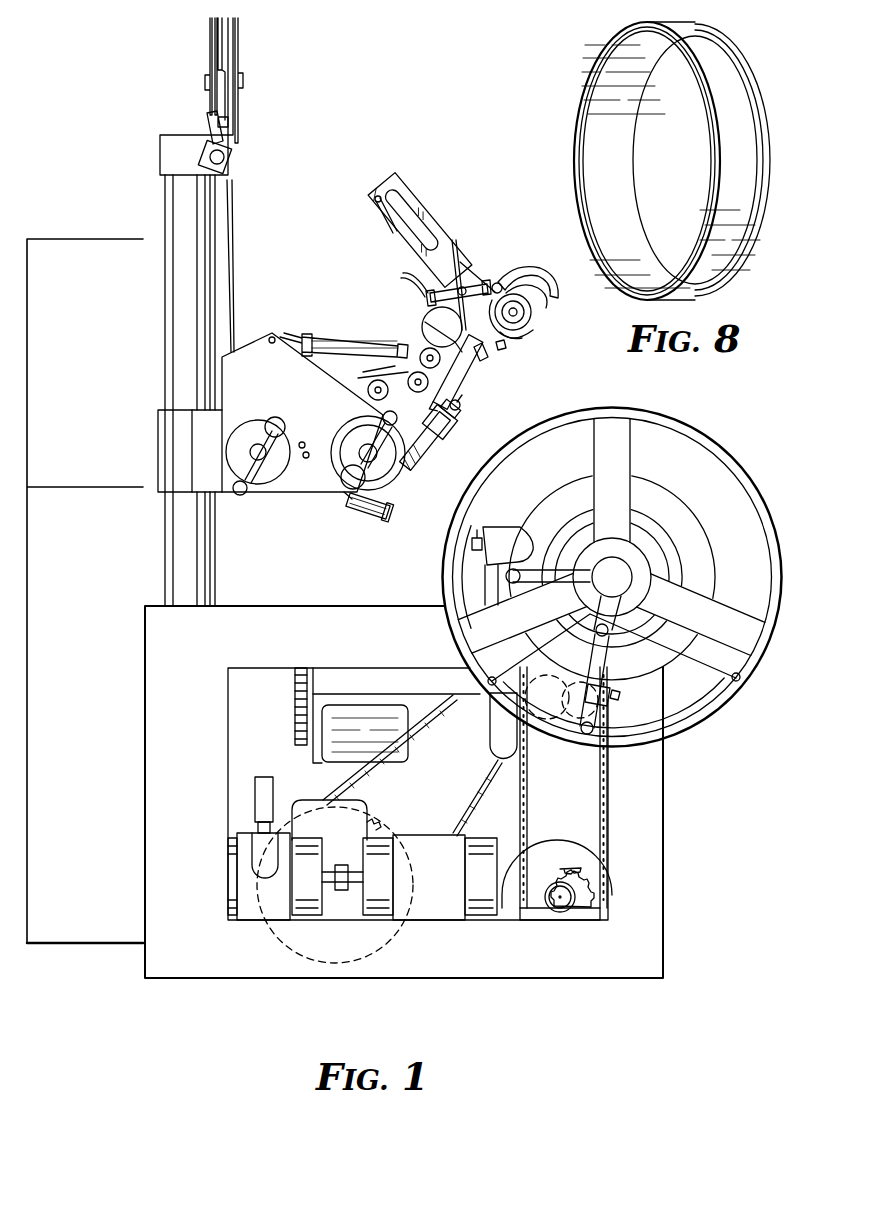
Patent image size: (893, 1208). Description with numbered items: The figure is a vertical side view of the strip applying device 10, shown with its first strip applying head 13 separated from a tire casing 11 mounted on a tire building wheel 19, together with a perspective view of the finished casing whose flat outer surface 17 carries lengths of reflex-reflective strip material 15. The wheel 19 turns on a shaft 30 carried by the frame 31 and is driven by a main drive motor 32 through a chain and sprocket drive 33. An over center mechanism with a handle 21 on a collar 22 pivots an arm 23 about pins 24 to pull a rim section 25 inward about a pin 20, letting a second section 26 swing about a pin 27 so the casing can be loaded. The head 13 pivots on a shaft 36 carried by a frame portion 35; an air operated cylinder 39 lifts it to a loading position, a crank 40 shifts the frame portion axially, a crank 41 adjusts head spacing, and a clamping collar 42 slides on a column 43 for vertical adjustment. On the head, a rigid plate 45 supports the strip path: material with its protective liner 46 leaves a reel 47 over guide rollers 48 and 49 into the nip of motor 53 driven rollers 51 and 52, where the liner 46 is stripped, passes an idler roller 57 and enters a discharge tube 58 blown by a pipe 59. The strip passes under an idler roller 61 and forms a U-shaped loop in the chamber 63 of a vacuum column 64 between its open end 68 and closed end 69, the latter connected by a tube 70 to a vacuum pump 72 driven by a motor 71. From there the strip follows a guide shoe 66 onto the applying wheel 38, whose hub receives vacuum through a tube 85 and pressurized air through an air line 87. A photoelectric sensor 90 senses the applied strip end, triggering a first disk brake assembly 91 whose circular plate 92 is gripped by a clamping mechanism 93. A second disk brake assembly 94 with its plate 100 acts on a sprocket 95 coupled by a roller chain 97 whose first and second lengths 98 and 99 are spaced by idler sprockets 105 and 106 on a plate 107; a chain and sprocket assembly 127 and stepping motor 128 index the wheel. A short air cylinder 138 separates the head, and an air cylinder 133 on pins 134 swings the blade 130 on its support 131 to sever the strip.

In FIG. 1, the device 10 is at (668, 840).
In FIG. 8, the tire casing 11 is at (580, 118).
In FIG. 1, the first strip applying head 13 is at (486, 250).
In FIG. 1, the strip material 15 is at (455, 258).
In FIG. 8, the strip material 15 is at (713, 97).
In FIG. 8, the outer surface 17 is at (742, 125).
In FIG. 1, the tire building wheel 19 is at (721, 448).
In FIG. 1, the pin 20 is at (463, 664).
In FIG. 1, the handle 21 is at (522, 590).
In FIG. 1, the collar 22 is at (650, 560).
In FIG. 1, the arm 23 is at (606, 672).
In FIG. 1, the pins 24 is at (585, 737).
In FIG. 1, the section 25 is at (540, 812).
In FIG. 1, the second section 26 is at (690, 712).
In FIG. 1, the pin 27 is at (738, 684).
In FIG. 1, the shaft 30 is at (609, 565).
In FIG. 1, the frame 31 is at (655, 942).
In FIG. 1, the main drive motor 32 is at (366, 806).
In FIG. 1, the chain and sprocket drive 33 is at (335, 795).
In FIG. 1, the frame portion 35 is at (303, 495).
In FIG. 1, the shaft 36 is at (382, 472).
In FIG. 1, the applying wheel 38 is at (533, 318).
In FIG. 1, the air operated cylinder 39 is at (343, 338).
In FIG. 1, the crank 40 is at (240, 495).
In FIG. 1, the crank 41 is at (388, 418).
In FIG. 1, the clamping collar 42 is at (158, 437).
In FIG. 1, the column 43 is at (160, 207).
In FIG. 1, the plate 45 is at (414, 462).
In FIG. 1, the protective liner 46 is at (466, 375).
In FIG. 1, the reel 47 is at (233, 28).
In FIG. 1, the guide rollers 48 is at (228, 121).
In FIG. 1, the guide rollers 49 is at (376, 382).
In FIG. 1, the roller 51 is at (432, 327).
In FIG. 1, the roller 52 is at (484, 356).
In FIG. 1, the motor 53 is at (422, 330).
In FIG. 1, the idler roller 57 is at (525, 355).
In FIG. 1, the liner discharge tube 58 is at (430, 478).
In FIG. 1, the pipe 59 is at (444, 440).
In FIG. 1, the idler roller 61 is at (425, 300).
In FIG. 1, the chamber 63 is at (420, 212).
In FIG. 1, the vacuum column 64 is at (412, 176).
In FIG. 1, the guide shoe 66 is at (522, 336).
In FIG. 1, the open end 68 is at (415, 275).
In FIG. 1, the closed end 69 is at (393, 186).
In FIG. 1, the tube 70 is at (385, 215).
In FIG. 1, the motor 71 is at (452, 878).
In FIG. 1, the vacuum pump 72 is at (245, 876).
In FIG. 1, the tube 85 is at (497, 280).
In FIG. 1, the air line 87 is at (508, 290).
In FIG. 1, the photoelectric sensor 90 is at (507, 345).
In FIG. 1, the first disk brake assembly 91 is at (482, 558).
In FIG. 1, the circular plate 92 is at (556, 492).
In FIG. 1, the clamping mechanism 93 is at (510, 530).
In FIG. 1, the second disk brake assembly 94 is at (590, 850).
In FIG. 1, the sprocket 95 is at (565, 862).
In FIG. 1, the roller chain 97 is at (528, 808).
In FIG. 1, the first length of chain 98 is at (608, 822).
In FIG. 1, the second length of chain 99 is at (520, 822).
In FIG. 1, the circular plate 100 is at (515, 900).
In FIG. 1, the spacing idler sprocket 105 is at (612, 694).
In FIG. 1, the spacing idler sprocket 106 is at (548, 676).
In FIG. 1, the plate 107 is at (525, 660).
In FIG. 1, the chain and sprocket assembly 127 is at (295, 704).
In FIG. 1, the reversible stepping motor 128 is at (395, 742).
In FIG. 1, the blade 130 is at (552, 299).
In FIG. 1, the support 131 is at (530, 284).
In FIG. 1, the air cylinder 133 is at (462, 286).
In FIG. 1, the pins 134 is at (522, 272).
In FIG. 1, the short air cylinder 138 is at (362, 514).